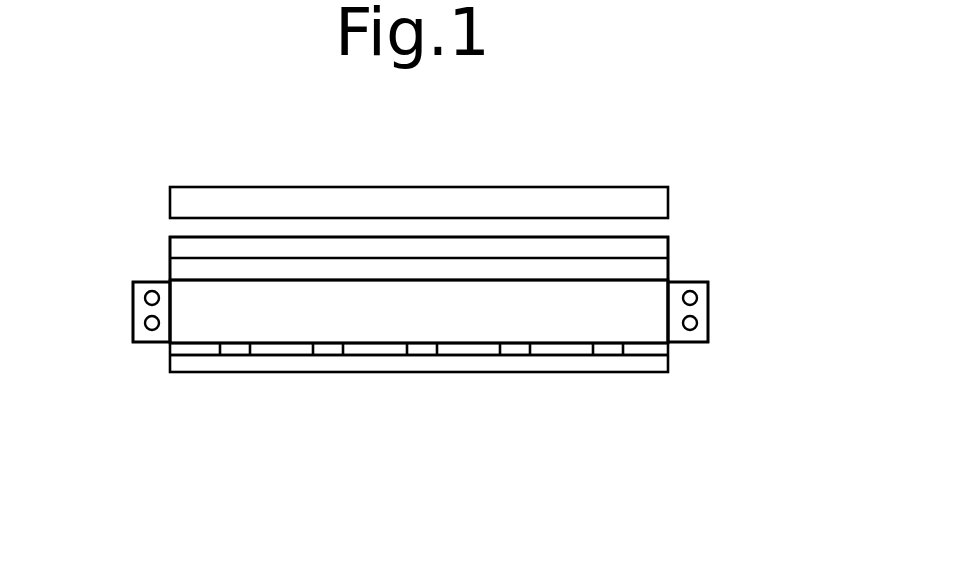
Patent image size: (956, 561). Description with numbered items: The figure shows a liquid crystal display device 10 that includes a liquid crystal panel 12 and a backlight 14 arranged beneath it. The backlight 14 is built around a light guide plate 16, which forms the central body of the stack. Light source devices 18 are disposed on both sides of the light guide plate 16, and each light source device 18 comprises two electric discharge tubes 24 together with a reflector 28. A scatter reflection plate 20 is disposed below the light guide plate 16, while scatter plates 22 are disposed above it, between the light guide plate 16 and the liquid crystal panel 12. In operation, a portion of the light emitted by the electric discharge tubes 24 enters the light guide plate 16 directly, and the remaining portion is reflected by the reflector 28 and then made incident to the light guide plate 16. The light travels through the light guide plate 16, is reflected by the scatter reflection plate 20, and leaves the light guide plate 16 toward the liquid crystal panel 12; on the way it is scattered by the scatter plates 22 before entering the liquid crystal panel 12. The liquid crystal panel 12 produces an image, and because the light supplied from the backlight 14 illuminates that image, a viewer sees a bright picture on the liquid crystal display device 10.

The liquid crystal display device 10 is at (657, 162).
The liquid crystal panel 12 is at (487, 199).
The backlight 14 is at (698, 362).
The light guide plate 16 is at (367, 318).
The light source device 18 is at (110, 305).
The scatter reflection plate 20 is at (477, 362).
The scatter plates 22 is at (657, 270).
The electric discharge tubes 24 is at (145, 302).
The reflector 28 is at (150, 282).